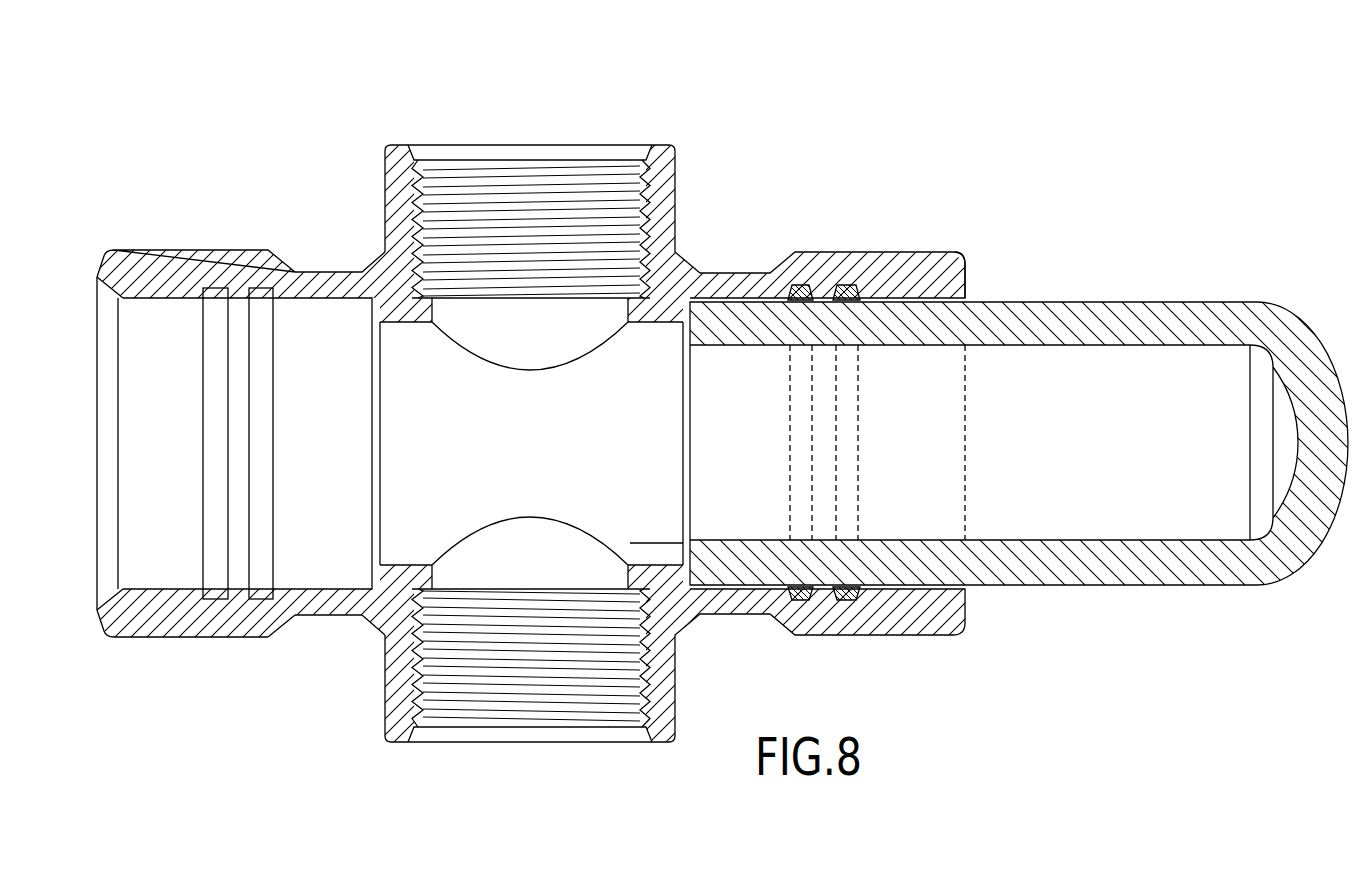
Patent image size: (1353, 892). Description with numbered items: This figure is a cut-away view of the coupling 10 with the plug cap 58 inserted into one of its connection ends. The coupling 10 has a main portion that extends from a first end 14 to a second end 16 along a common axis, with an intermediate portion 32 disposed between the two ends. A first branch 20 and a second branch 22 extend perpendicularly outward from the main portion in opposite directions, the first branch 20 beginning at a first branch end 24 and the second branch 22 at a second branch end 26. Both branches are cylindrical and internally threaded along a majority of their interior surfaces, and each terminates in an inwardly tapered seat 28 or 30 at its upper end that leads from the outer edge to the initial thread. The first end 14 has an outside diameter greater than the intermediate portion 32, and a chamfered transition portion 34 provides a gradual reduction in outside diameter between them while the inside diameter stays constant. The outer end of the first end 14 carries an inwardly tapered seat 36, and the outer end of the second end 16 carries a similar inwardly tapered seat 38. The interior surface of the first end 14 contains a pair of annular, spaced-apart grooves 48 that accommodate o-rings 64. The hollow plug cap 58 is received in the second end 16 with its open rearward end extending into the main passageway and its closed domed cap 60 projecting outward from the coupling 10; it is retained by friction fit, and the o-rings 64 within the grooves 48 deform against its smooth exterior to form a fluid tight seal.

The coupling 10 is at (297, 163).
The first end 14 is at (112, 250).
The second end 16 is at (876, 640).
The first branch 20 is at (678, 168).
The second branch 22 is at (678, 694).
The first branch end 24 is at (363, 272).
The second branch end 26 is at (362, 622).
The inwardly tapered seat 28 is at (648, 155).
The inwardly tapered seat 30 is at (647, 727).
The intermediate portion 32 is at (322, 620).
The transition portion 34 is at (284, 628).
The inwardly tapered seat 36 is at (100, 355).
The inwardly tapered seat 38 is at (957, 292).
The grooves 48 is at (265, 323).
The plug cap 58 is at (1171, 287).
The domed cap 60 is at (1320, 545).
The o-rings 64 is at (850, 290).